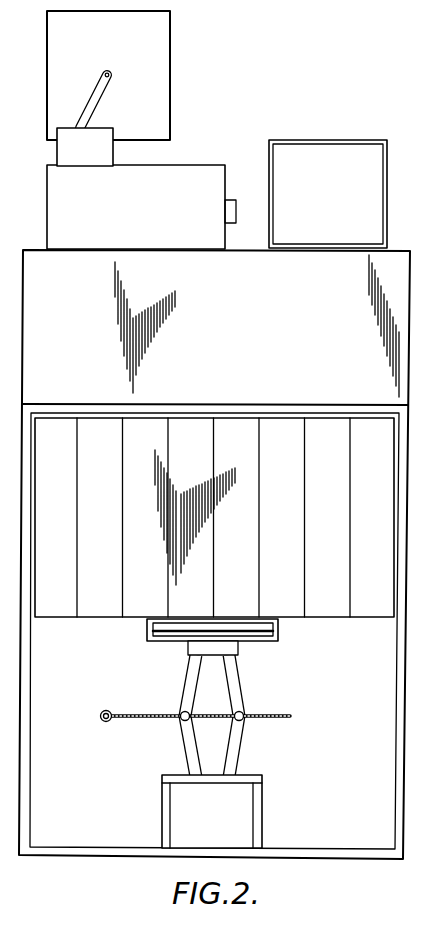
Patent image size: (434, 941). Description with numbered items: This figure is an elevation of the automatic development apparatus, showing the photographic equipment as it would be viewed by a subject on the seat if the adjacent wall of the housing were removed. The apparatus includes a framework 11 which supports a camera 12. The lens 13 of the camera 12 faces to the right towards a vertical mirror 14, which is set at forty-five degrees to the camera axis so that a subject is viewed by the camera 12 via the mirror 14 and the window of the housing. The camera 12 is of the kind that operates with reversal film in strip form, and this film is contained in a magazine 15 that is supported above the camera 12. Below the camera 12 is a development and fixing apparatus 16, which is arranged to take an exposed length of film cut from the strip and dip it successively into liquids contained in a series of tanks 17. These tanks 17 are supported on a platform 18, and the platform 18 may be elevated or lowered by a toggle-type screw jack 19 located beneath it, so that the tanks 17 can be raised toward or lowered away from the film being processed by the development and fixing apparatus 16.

The framework 11 is at (24, 690).
The camera 12 is at (138, 209).
The lens 13 is at (233, 203).
The vertical mirror 14 is at (335, 157).
The magazine 15 is at (114, 45).
The development and fixing apparatus 16 is at (263, 355).
The tanks 17 is at (63, 530).
The platform 18 is at (70, 619).
The toggle-type screw jack 19 is at (181, 712).